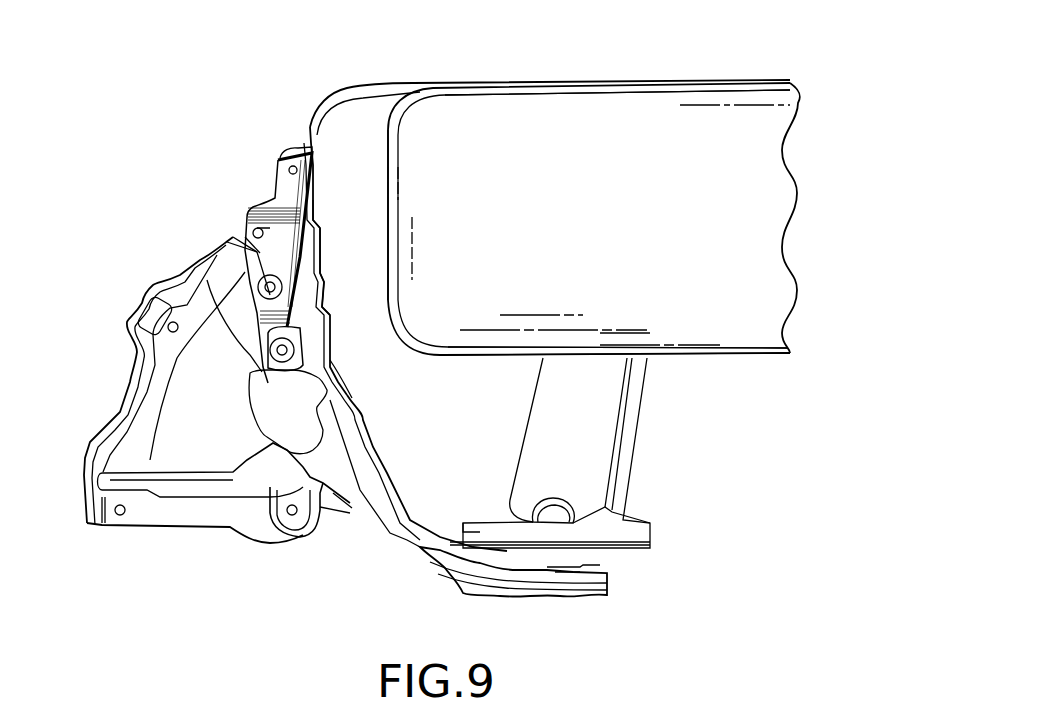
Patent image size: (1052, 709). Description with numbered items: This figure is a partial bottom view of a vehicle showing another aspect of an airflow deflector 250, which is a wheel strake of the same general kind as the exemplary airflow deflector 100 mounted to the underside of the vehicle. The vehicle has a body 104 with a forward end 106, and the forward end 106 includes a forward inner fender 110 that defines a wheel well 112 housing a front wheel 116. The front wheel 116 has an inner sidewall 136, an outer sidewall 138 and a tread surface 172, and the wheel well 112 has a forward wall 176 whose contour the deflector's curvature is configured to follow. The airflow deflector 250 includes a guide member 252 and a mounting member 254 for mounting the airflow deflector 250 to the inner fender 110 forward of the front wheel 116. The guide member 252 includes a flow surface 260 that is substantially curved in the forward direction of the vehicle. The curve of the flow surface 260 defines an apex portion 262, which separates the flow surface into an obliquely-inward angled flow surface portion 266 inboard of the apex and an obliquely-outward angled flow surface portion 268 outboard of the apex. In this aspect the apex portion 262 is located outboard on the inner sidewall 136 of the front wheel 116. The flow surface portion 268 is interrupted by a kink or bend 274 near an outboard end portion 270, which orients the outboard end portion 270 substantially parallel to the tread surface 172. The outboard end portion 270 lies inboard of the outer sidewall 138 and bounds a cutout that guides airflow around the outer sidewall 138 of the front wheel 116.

The airflow deflector 100 is at (183, 205).
The body 104 is at (392, 562).
The forward end 106 is at (93, 522).
The forward inner fender 110 is at (503, 450).
The wheel well 112 is at (517, 403).
The front wheel 116 is at (657, 107).
The inner sidewall 136 is at (687, 360).
The outer sidewall 138 is at (607, 87).
The tread surface 172 is at (388, 202).
The forward wall 176 is at (360, 435).
The airflow deflector 250 is at (241, 168).
The guide member 252 is at (267, 358).
The mounting member 254 is at (242, 230).
The flow surface 260 is at (300, 233).
The apex portion 262 is at (325, 296).
The flow surface portion 266 is at (310, 343).
The flow surface portion 268 is at (308, 223).
The outboard end portion 270 is at (308, 150).
The bend 274 is at (313, 185).